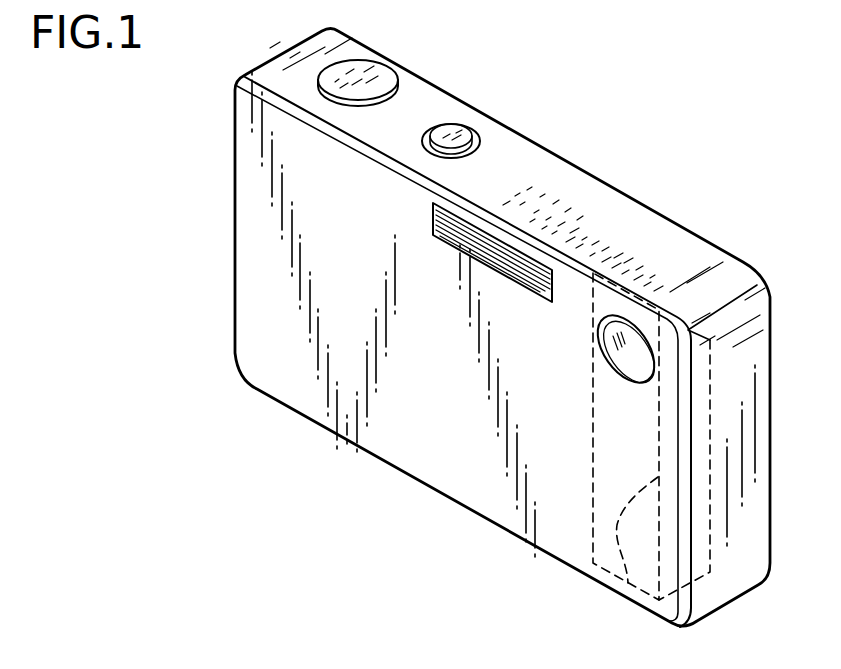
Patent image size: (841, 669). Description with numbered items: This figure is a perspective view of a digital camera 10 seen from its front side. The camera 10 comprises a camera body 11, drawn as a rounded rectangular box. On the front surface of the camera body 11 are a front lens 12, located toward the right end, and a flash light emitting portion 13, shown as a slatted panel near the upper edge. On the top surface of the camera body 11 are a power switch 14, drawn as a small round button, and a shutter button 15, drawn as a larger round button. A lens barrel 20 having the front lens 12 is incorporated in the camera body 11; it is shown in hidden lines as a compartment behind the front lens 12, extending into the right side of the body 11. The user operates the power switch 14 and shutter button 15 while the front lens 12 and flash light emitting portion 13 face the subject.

The digital camera 10 is at (582, 122).
The camera body 11 is at (678, 222).
The front lens 12 is at (627, 366).
The flash light emitting portion 13 is at (432, 214).
The power switch 14 is at (450, 130).
The shutter button 15 is at (373, 73).
The lens barrel 20 is at (604, 588).